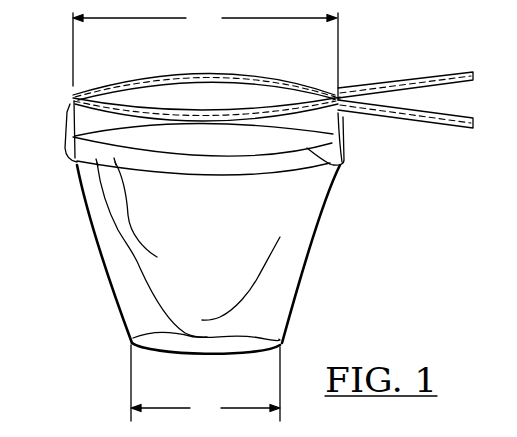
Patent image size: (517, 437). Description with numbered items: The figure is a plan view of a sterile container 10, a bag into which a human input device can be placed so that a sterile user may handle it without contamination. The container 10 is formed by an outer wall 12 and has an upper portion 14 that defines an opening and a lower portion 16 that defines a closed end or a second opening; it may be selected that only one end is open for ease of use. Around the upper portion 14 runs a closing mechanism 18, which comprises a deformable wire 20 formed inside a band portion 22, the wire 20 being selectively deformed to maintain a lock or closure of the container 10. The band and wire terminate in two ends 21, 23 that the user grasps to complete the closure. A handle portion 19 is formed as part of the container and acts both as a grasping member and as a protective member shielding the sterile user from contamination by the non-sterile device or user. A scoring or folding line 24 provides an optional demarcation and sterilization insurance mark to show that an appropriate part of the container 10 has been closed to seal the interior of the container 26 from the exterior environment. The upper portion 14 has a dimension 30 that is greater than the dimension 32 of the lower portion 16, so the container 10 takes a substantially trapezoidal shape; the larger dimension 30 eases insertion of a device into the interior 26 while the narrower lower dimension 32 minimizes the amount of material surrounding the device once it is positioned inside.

The sterile container 10 is at (97, 319).
The outer wall 12 is at (95, 238).
The upper portion 14 is at (82, 89).
The lower portion 16 is at (200, 352).
The closing mechanism 18 is at (339, 91).
The handle portion 19 is at (68, 150).
The wire 20 is at (390, 82).
The end 21 is at (430, 88).
The band portion 22 is at (241, 70).
The end 23 is at (417, 123).
The scoring or folding line 24 is at (331, 165).
The interior of the container 26 is at (182, 98).
The dimension 30 is at (205, 51).
The dimension 32 is at (205, 384).